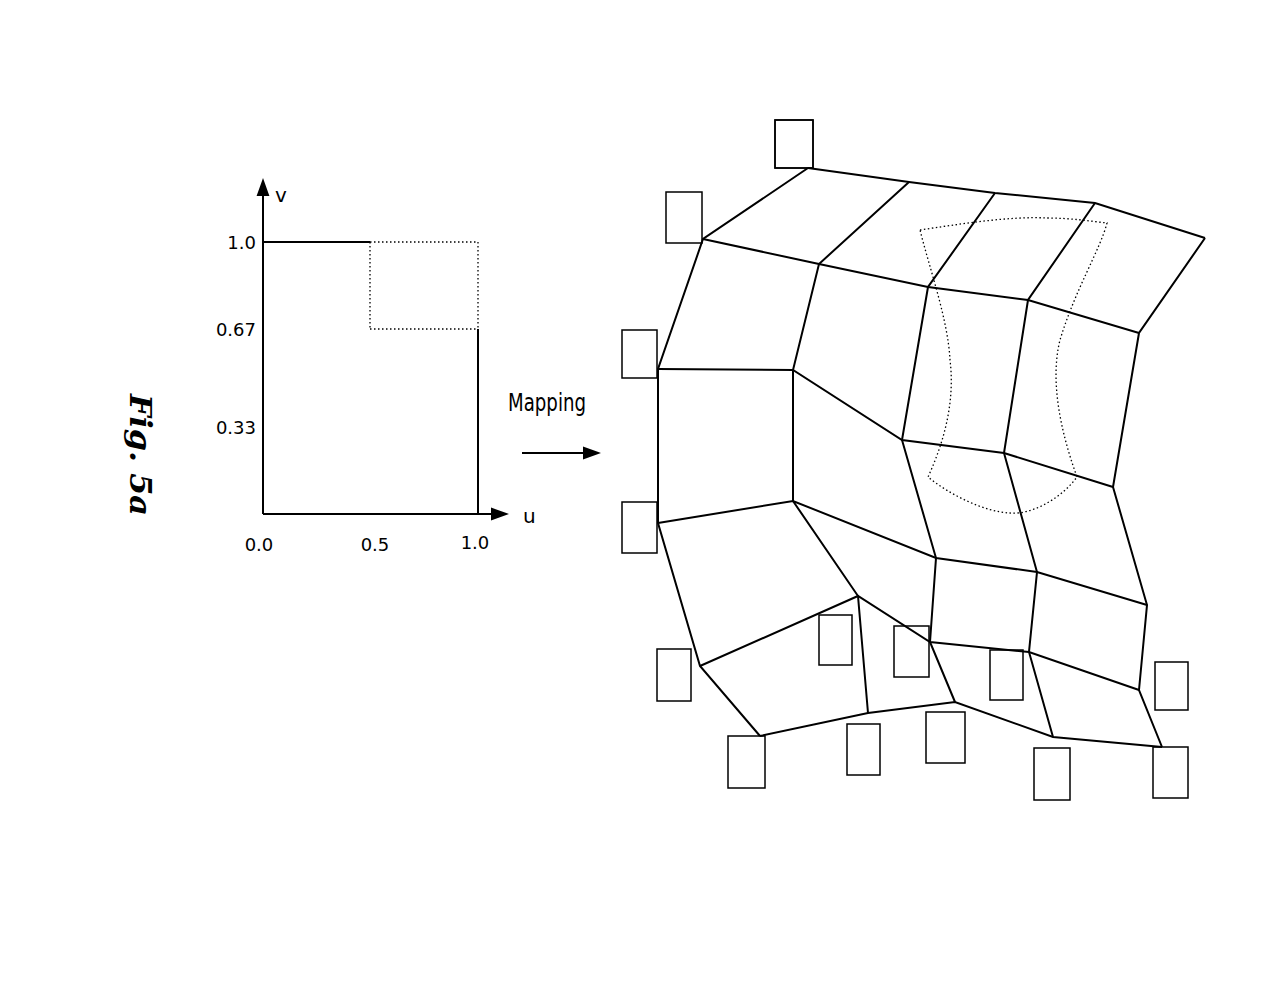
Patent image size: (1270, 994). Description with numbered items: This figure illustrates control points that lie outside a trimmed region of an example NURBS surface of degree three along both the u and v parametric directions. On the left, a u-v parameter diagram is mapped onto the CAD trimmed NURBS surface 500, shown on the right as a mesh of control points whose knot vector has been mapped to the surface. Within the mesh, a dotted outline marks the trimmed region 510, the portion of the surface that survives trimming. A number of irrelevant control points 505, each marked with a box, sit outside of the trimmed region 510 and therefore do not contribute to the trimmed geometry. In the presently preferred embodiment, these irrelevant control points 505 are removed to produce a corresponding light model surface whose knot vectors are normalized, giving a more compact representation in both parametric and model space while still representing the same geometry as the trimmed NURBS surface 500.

The trimmed NURBS surface 500 is at (1067, 192).
The irrelevant control points 505 is at (779, 110).
The trimmed region 510 is at (945, 216).